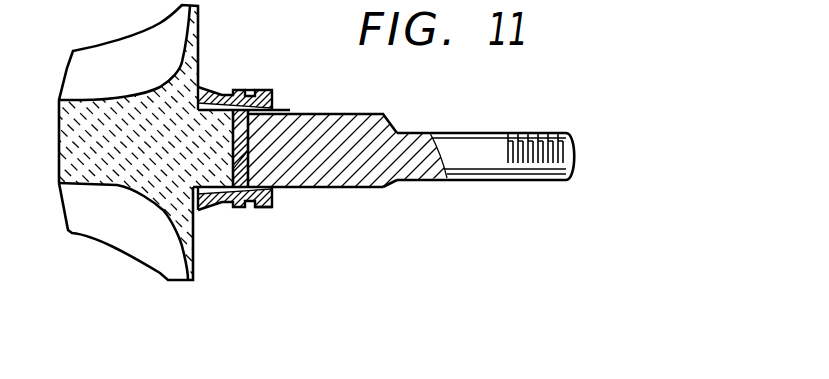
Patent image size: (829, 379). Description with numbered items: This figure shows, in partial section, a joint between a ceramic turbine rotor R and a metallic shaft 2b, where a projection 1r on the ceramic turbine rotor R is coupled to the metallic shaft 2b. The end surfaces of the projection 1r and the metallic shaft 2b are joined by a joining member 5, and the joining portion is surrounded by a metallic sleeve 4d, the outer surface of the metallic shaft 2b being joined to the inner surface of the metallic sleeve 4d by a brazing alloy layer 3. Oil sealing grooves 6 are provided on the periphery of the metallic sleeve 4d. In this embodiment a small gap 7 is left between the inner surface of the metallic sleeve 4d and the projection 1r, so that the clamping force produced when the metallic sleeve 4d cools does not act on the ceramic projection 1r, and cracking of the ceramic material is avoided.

The ceramic turbine rotor R is at (128, 167).
The projection 1r is at (218, 163).
The brazing alloy layer 3 is at (287, 110).
The metallic shaft 2b is at (372, 176).
The small gap 7 is at (202, 87).
The joining member 5 is at (255, 89).
The oil sealing grooves 6 is at (223, 206).
The metallic sleeve 4d is at (267, 207).